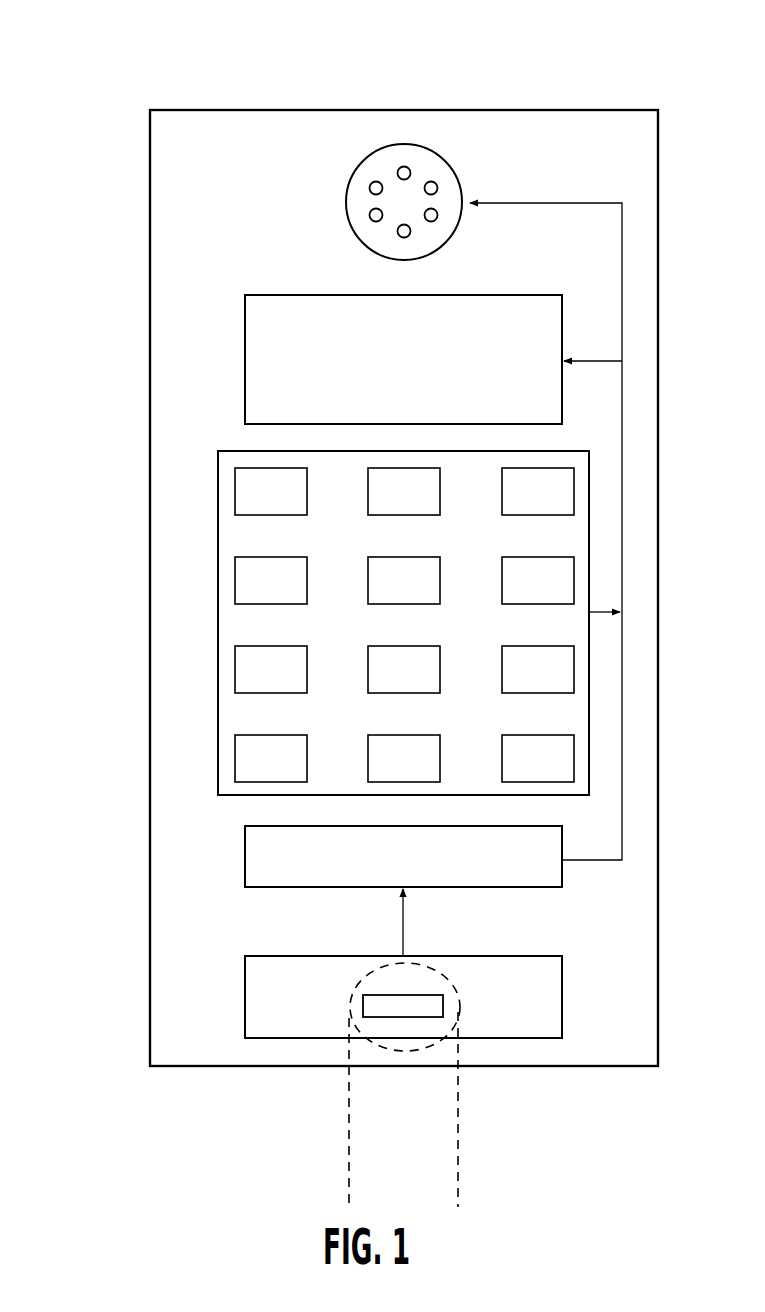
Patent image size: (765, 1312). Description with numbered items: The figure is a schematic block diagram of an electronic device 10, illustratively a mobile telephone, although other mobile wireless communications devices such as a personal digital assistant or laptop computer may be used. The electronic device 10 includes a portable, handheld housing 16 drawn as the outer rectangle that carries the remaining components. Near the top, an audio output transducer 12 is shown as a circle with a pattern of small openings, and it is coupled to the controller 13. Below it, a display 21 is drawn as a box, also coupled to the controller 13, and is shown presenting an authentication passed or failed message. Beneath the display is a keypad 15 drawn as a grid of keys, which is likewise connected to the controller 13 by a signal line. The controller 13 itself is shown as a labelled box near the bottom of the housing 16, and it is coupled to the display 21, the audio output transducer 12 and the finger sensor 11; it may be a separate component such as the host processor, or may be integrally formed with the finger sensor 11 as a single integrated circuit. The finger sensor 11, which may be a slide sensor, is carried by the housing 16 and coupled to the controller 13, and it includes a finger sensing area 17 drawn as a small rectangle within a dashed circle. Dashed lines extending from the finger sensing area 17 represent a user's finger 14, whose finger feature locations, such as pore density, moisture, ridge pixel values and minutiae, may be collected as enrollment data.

The electronic device 10 is at (197, 105).
The portable, handheld housing 16 is at (149, 235).
The audio output transducer 12 is at (405, 157).
The display 21 is at (247, 369).
The keypad 15 is at (218, 582).
The controller 13 is at (260, 850).
The finger sensor 11 is at (346, 1015).
The finger sensing area 17 is at (380, 1007).
The user's finger 14 is at (375, 1143).